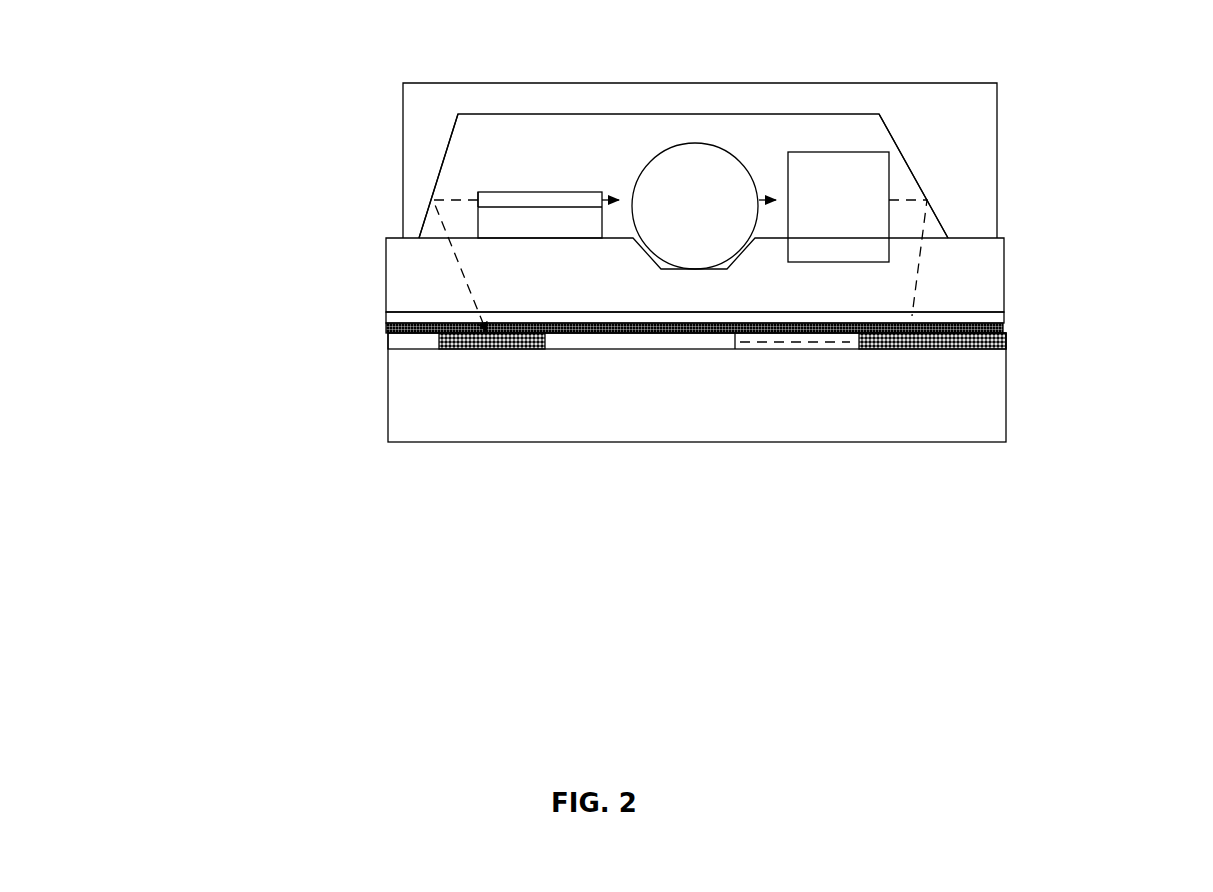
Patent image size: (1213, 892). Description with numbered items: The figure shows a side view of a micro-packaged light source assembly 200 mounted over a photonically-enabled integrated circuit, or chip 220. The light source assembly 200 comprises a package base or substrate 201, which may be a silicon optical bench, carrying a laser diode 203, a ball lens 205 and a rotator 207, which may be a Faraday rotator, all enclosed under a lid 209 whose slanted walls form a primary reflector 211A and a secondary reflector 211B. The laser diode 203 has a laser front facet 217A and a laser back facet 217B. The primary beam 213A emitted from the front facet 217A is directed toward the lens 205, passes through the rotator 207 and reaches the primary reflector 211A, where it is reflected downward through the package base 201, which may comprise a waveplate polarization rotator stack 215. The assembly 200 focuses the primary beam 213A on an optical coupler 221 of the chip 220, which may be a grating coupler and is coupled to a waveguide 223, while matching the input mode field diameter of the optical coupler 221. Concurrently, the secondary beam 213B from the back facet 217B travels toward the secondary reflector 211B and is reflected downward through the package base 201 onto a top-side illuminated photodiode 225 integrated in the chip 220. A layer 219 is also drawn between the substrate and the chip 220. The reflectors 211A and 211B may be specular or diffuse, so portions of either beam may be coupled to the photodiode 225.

The light source assembly 200 is at (272, 165).
The package base 201 is at (695, 275).
The laser diode 203 is at (529, 198).
The ball lens 205 is at (704, 206).
The rotator 207 is at (838, 207).
The lid 209 is at (700, 160).
The primary reflector 211A is at (907, 158).
The secondary reflector 211B is at (442, 157).
The primary beam 213A is at (930, 286).
The secondary beam 213B is at (452, 271).
The rotator stack 215 is at (386, 317).
The laser front facet 217A is at (609, 194).
The laser back facet 217B is at (477, 198).
The metal layer 219 is at (1004, 327).
The photonically-enabled integrated circuit 220 is at (697, 387).
The optical coupler 221 is at (1006, 342).
The waveguide 223 is at (797, 349).
The top-side illuminated photodiode 225 is at (507, 352).